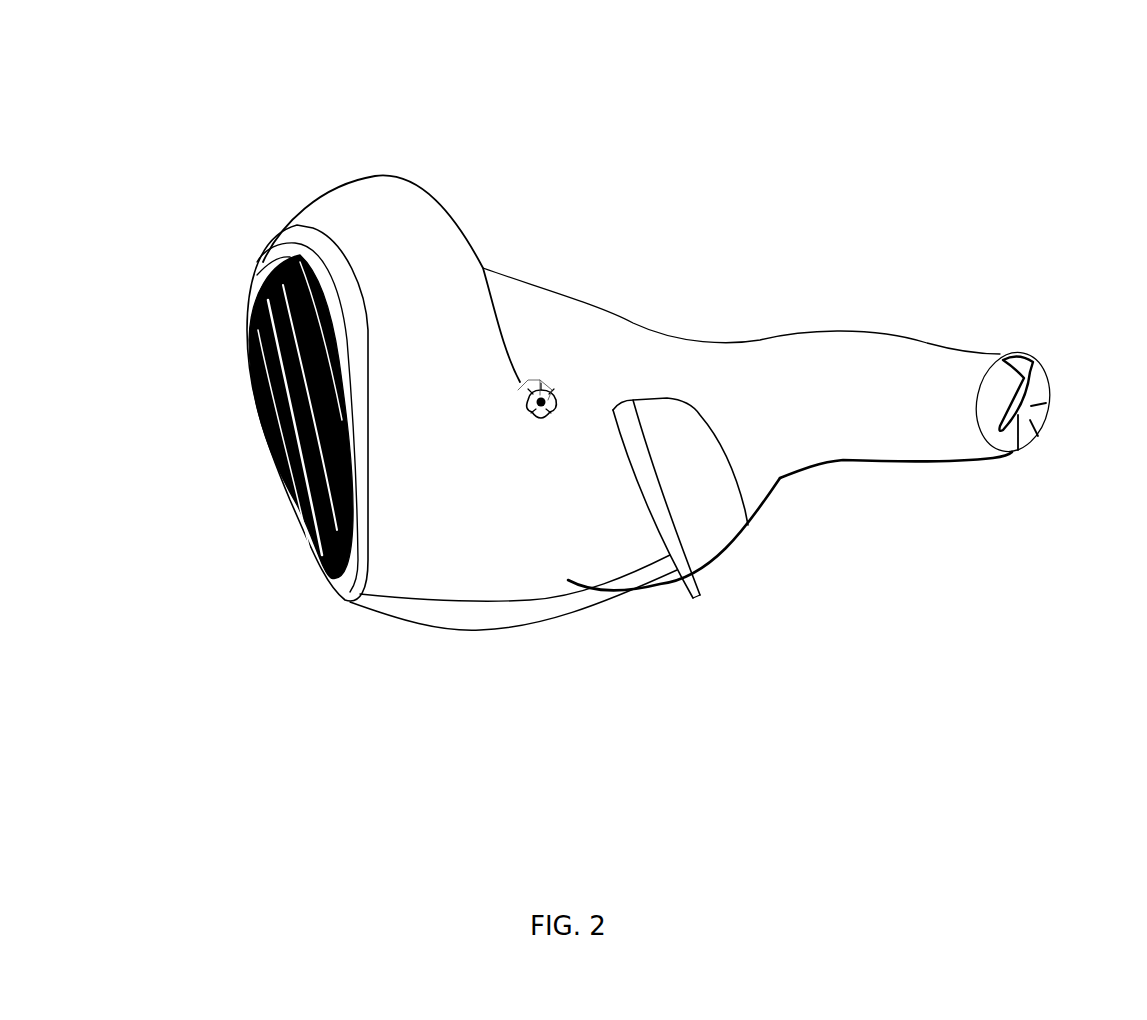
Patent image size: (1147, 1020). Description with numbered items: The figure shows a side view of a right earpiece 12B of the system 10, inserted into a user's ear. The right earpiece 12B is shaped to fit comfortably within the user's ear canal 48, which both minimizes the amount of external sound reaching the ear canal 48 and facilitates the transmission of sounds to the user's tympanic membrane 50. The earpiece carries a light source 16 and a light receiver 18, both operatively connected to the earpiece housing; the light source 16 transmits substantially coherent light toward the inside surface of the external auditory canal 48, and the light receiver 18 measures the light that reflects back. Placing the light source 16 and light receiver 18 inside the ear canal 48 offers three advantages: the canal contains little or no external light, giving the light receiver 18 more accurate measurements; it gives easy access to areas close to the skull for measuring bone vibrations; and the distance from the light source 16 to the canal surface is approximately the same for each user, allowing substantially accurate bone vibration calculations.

The system 10 is at (210, 110).
The right earpiece 12B is at (293, 207).
The light source 16 is at (541, 418).
The light receiver 18 is at (530, 373).
The ear canal 48 is at (917, 368).
The tympanic membrane 50 is at (1046, 403).